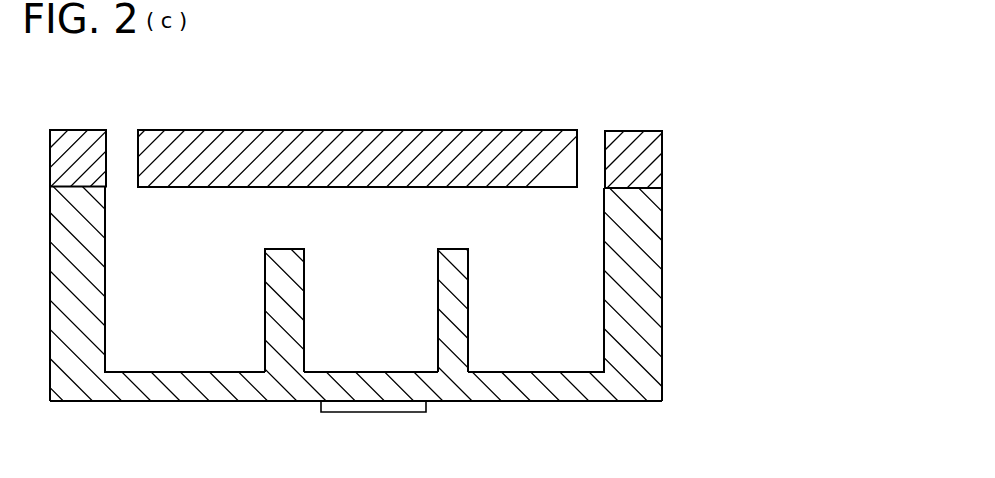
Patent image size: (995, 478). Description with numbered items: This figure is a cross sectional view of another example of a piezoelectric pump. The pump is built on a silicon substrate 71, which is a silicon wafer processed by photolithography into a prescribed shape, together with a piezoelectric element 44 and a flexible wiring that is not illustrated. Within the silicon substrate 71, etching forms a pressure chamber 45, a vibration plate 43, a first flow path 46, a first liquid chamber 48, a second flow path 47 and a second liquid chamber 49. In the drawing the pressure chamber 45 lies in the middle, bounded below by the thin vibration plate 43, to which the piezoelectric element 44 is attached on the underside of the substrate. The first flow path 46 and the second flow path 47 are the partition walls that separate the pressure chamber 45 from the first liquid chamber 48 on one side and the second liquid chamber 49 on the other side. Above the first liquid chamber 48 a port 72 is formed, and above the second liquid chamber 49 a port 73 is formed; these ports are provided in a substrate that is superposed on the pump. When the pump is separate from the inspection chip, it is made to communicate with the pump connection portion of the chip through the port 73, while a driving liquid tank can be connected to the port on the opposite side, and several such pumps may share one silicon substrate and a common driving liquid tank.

The silicon substrate 71 is at (632, 356).
The vibration plate 43 is at (392, 388).
The piezoelectric element 44 is at (367, 408).
The pressure chamber 45 is at (368, 293).
The first flow path 46 is at (453, 233).
The second flow path 47 is at (280, 237).
The first liquid chamber 48 is at (543, 301).
The second liquid chamber 49 is at (197, 325).
The port 72 is at (592, 143).
The port 73 is at (122, 145).